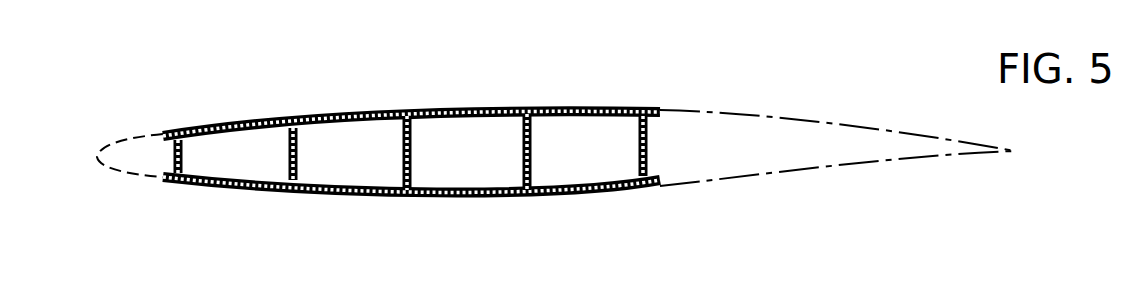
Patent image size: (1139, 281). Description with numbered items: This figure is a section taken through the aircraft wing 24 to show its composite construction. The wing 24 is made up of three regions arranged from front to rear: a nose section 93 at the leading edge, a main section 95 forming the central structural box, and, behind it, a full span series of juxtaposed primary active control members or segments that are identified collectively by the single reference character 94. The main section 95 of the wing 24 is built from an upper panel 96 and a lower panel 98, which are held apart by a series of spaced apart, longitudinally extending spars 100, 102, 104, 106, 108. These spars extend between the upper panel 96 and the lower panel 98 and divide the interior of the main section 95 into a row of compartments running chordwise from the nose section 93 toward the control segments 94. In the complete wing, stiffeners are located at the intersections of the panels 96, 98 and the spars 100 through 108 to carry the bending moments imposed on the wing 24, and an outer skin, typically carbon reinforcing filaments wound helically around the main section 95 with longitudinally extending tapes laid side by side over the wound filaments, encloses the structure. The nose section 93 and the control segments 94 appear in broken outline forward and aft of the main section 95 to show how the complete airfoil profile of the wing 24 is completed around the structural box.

The wing 24 is at (535, 151).
The nose section 93 is at (150, 133).
The primary active control members 94 is at (862, 125).
The main section 95 is at (615, 194).
The upper panel 96 is at (337, 111).
The lower panel 98 is at (335, 197).
The spar 100 is at (165, 155).
The spar 102 is at (288, 155).
The spar 104 is at (402, 156).
The spar 106 is at (521, 155).
The spar 108 is at (638, 156).